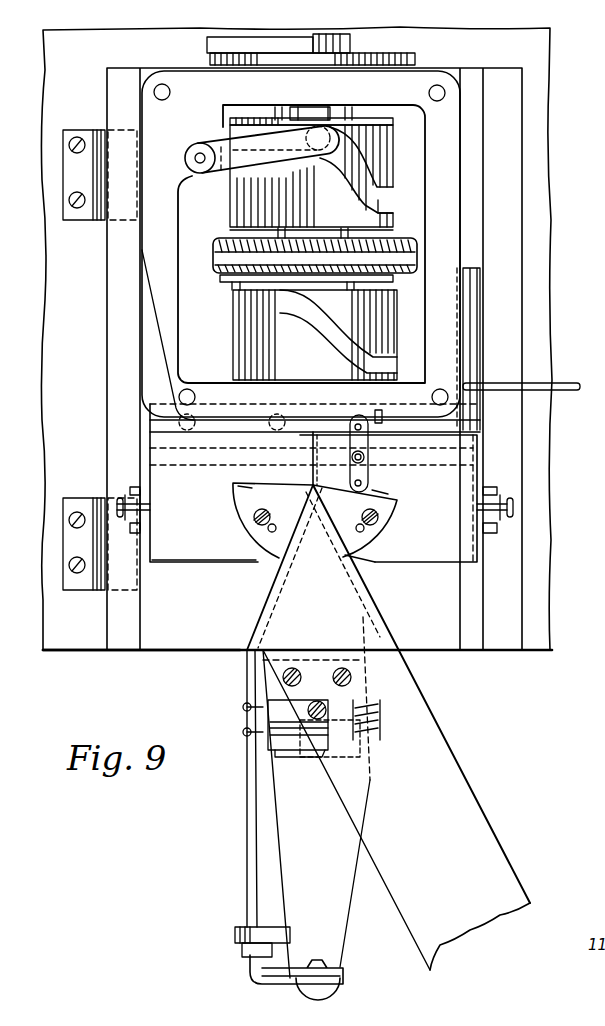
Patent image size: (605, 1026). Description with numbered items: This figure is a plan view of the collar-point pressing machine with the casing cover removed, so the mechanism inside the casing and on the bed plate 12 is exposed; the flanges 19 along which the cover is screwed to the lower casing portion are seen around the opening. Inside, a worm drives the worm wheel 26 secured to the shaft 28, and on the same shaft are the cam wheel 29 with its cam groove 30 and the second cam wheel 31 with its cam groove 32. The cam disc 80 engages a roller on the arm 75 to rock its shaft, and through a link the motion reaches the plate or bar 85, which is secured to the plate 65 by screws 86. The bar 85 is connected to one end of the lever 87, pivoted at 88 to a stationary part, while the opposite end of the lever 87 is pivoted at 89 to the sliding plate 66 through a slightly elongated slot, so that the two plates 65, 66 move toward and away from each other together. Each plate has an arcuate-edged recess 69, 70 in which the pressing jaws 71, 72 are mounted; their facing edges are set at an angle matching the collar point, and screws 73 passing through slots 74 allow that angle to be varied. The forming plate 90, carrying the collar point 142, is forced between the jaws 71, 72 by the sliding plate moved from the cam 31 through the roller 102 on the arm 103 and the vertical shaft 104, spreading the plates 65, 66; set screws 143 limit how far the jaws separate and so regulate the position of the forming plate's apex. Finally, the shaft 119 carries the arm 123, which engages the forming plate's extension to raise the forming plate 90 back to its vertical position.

The bed plate 12 is at (204, 668).
The flanges 19 is at (447, 181).
The worm wheel 26 is at (223, 273).
The shaft 28 is at (300, 114).
The cam wheel 29 is at (263, 336).
The cam groove 30 is at (247, 300).
The second cam wheel 31 is at (380, 148).
The cam groove 32 is at (380, 200).
The plate 65 is at (172, 547).
The plate 66 is at (430, 547).
The recess 69 is at (250, 490).
The recess 70 is at (390, 498).
The pressing jaw 71 is at (247, 507).
The pressing jaw 72 is at (375, 536).
The screws 73 is at (255, 519).
The slots 74 is at (268, 530).
The arm 75 is at (387, 508).
The cam disc 80 is at (412, 58).
The plate or bar 85 is at (227, 432).
The screws 86 is at (179, 421).
The lever 87 is at (367, 438).
The pivot 88 is at (368, 456).
The pivot 89 is at (368, 483).
The forming plate 90 is at (353, 579).
The roller 102 is at (322, 130).
The arm 103 is at (213, 140).
The shaft 104 is at (193, 150).
The shaft 119 is at (253, 890).
The arm 123 is at (343, 975).
The collar point 142 is at (360, 599).
The set screws 143 is at (117, 500).